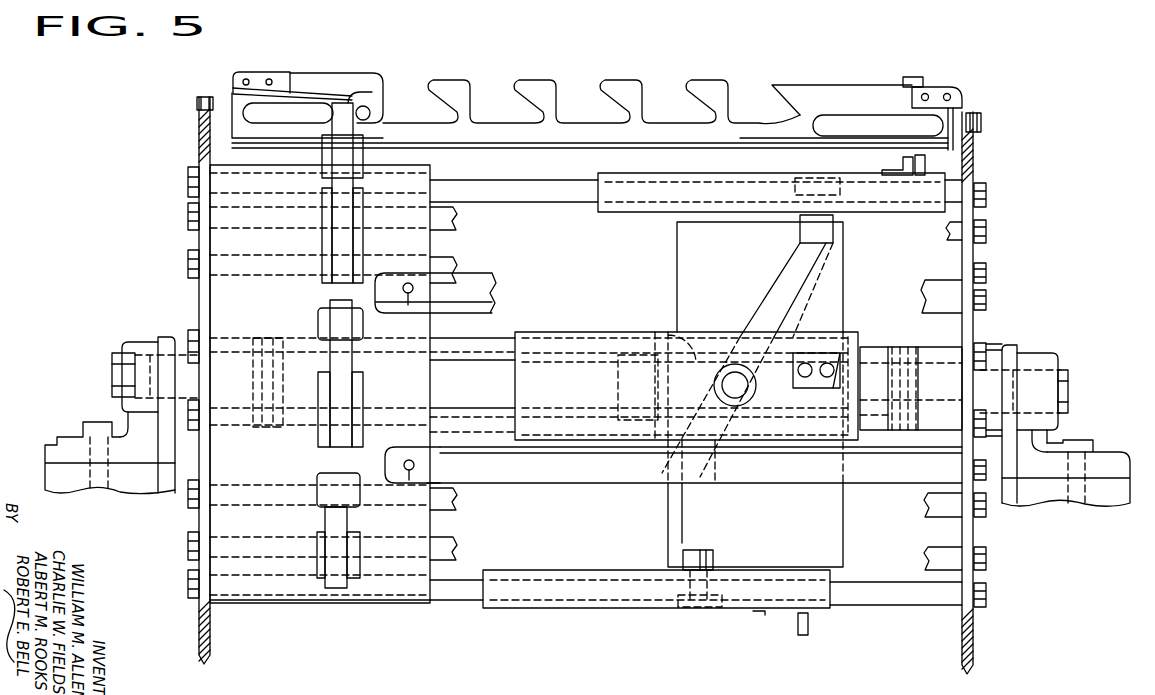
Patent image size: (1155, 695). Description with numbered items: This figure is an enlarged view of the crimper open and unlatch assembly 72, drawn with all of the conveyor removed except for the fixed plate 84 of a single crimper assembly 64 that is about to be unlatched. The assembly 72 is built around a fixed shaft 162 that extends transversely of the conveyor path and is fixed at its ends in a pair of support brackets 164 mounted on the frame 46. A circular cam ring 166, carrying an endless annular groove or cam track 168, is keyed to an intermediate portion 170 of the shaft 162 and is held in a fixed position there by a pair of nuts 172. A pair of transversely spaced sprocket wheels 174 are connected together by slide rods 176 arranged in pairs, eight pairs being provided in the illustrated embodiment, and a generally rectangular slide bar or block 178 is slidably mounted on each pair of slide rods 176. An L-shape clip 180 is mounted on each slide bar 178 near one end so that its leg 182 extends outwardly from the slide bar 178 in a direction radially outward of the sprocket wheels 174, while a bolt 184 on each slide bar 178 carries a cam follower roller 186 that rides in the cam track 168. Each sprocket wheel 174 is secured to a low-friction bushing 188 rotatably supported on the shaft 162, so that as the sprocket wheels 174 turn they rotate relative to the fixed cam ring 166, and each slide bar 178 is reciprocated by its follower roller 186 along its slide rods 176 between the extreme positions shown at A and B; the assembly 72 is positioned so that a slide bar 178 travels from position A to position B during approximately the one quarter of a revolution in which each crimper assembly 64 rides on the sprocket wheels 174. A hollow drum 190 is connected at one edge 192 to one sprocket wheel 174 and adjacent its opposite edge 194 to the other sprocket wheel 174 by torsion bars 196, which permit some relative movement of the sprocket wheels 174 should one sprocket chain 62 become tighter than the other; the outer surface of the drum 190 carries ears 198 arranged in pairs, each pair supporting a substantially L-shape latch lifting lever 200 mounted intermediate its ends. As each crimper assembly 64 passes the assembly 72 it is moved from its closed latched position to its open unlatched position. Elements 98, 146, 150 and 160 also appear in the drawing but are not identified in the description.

The frame 46 is at (140, 492).
The sprocket chain 62 is at (205, 96).
The crimper assembly 64 is at (706, 77).
The crimper open and unlatch assembly 72 is at (1008, 257).
The fixed plate 84 is at (800, 96).
The spring 98 is at (600, 86).
The stop tab 146 is at (920, 78).
The slot 150 is at (898, 152).
The roller 160 is at (374, 112).
The fixed shaft 162 is at (990, 355).
The support brackets 164 is at (175, 337).
The circular cam ring 166 is at (836, 298).
The endless annular groove or cam track 168 is at (771, 294).
The intermediate portion of the shaft 170 is at (673, 314).
The nuts 172 is at (858, 336).
The sprocket wheels 174 is at (212, 645).
The slide rods 176 is at (882, 600).
The slide bar 178 is at (592, 606).
The L-shape clip 180 is at (885, 175).
The leg 182 is at (927, 165).
The bolt 184 is at (746, 386).
The cam follower roller 186 is at (716, 556).
The bushing 188 is at (236, 338).
The hollow drum 190 is at (300, 605).
The one edge of the drum 192 is at (215, 603).
The opposite edge of the drum 194 is at (431, 523).
The torsion bars 196 is at (486, 282).
The ears 198 is at (323, 383).
The latch lifting lever 200 is at (372, 131).
The extreme position A is at (906, 212).
The extreme position B is at (822, 610).